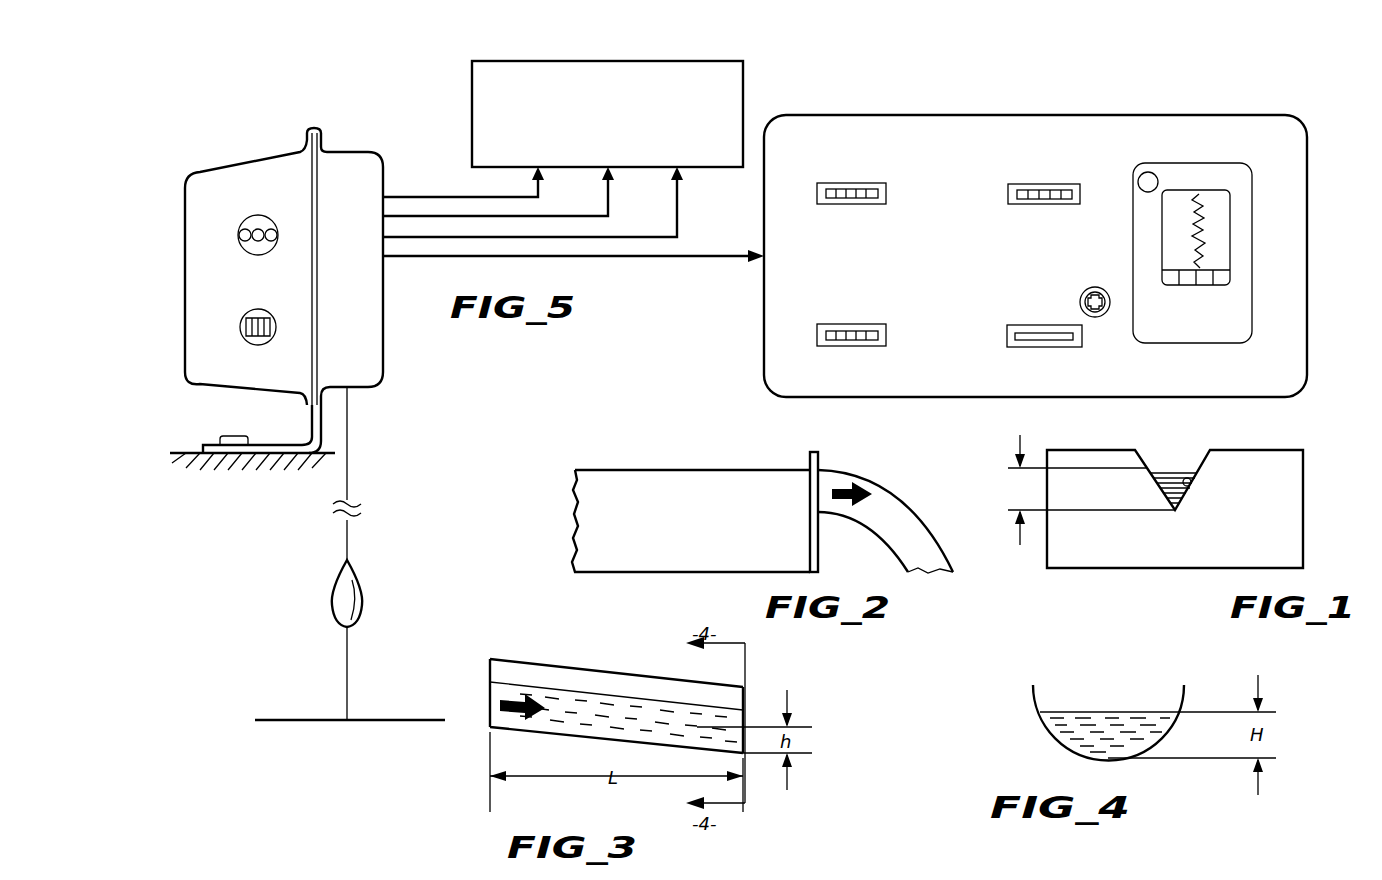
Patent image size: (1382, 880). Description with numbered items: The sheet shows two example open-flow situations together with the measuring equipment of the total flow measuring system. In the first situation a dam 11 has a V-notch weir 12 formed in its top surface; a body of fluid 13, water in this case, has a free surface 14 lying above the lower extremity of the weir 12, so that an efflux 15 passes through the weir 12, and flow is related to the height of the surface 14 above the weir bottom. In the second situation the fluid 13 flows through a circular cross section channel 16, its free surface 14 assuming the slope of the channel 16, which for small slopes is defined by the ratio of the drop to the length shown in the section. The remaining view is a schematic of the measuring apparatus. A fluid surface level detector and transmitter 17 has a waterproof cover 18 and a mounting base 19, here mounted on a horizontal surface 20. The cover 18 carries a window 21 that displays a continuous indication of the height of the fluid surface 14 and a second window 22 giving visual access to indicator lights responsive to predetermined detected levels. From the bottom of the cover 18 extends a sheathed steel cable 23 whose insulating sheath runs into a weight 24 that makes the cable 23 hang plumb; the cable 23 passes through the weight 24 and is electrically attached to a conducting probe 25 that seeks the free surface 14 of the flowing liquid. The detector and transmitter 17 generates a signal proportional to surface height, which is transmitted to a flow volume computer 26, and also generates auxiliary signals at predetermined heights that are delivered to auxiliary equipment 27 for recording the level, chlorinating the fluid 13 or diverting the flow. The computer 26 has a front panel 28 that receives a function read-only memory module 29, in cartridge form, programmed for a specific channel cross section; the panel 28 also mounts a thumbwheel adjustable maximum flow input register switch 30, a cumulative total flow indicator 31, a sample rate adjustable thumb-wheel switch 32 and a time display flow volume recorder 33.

In FIG. 2, the dam 11 is at (820, 455).
In FIG. 1, the dam 11 is at (1075, 450).
In FIG. 1, the V-notch weir 12 is at (1190, 480).
In FIG. 2, the body of fluid 13 is at (655, 567).
In FIG. 3, the body of fluid 13 is at (557, 697).
In FIG. 4, the body of fluid 13 is at (1150, 725).
In FIG. 5, the free surface 14 is at (410, 718).
In FIG. 2, the free surface 14 is at (670, 472).
In FIG. 1, the free surface 14 is at (1177, 470).
In FIG. 3, the free surface 14 is at (600, 693).
In FIG. 4, the free surface 14 is at (1115, 712).
In FIG. 2, the efflux 15 is at (915, 505).
In FIG. 3, the circular cross section channel 16 is at (575, 668).
In FIG. 4, the circular cross section channel 16 is at (1038, 698).
In FIG. 5, the fluid surface level detector and transmitter 17 is at (262, 132).
In FIG. 5, the waterproof cover 18 is at (200, 172).
In FIG. 5, the mounting base 19 is at (283, 445).
In FIG. 5, the horizontal surface 20 is at (190, 452).
In FIG. 5, the window 21 is at (242, 332).
In FIG. 5, the second window 22 is at (238, 248).
In FIG. 5, the sheathed steel cable 23 is at (350, 462).
In FIG. 5, the weight 24 is at (362, 598).
In FIG. 5, the probe 25 is at (348, 688).
In FIG. 5, the flow volume computer 26 is at (760, 410).
In FIG. 5, the auxiliary equipment 27 is at (700, 66).
In FIG. 5, the front panel 28 is at (775, 300).
In FIG. 5, the function read-only memory module 29 is at (1010, 336).
In FIG. 5, the maximum flow input register switch 30 is at (817, 335).
In FIG. 5, the cumulative total flow indicator 31 is at (855, 183).
In FIG. 5, the sample rate adjustable thumb-wheel switch 32 is at (1030, 184).
In FIG. 5, the time display flow volume recorder 33 is at (1230, 190).